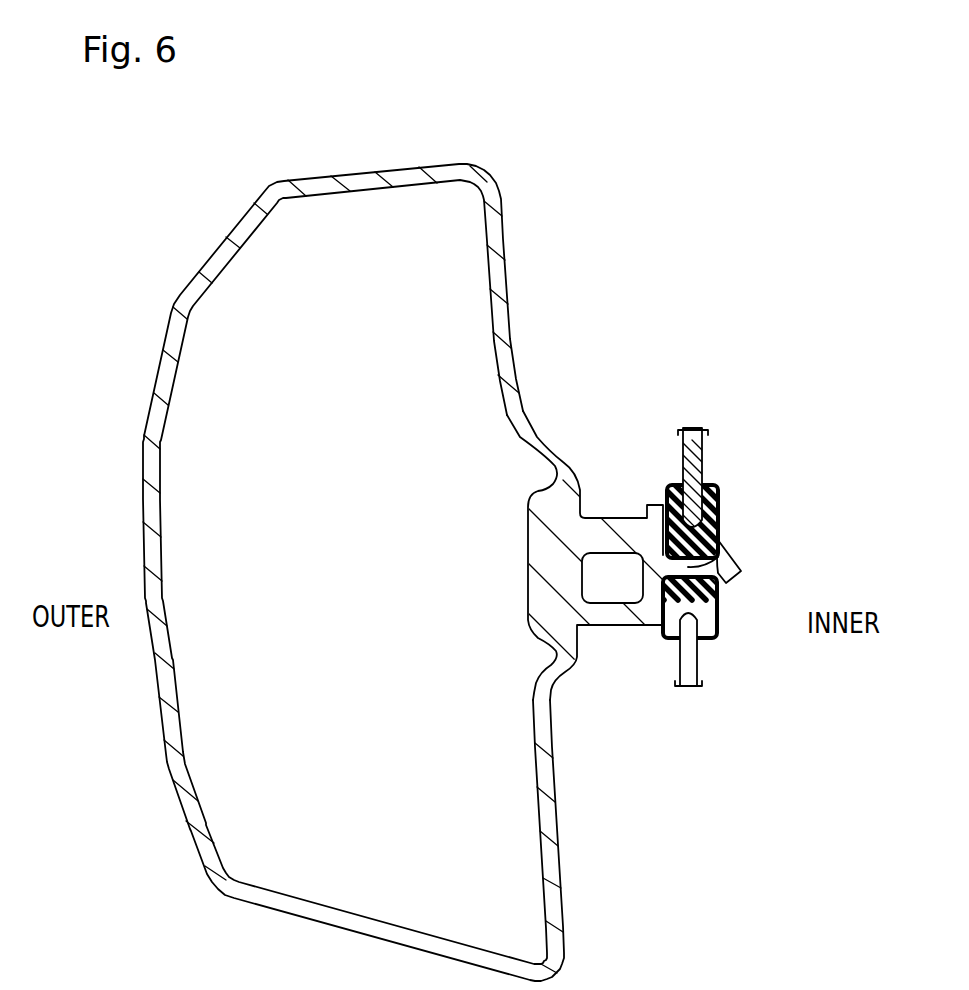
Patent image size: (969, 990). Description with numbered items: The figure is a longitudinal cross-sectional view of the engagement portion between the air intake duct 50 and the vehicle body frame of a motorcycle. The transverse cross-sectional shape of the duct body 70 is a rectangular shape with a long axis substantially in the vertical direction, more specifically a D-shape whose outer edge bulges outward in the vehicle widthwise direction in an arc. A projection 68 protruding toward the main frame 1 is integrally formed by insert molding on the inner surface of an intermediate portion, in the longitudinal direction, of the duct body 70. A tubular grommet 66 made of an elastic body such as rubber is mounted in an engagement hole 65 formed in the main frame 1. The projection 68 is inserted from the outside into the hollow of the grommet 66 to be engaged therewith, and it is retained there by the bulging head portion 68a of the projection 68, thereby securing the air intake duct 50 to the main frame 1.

The air intake duct 50 is at (460, 572).
The duct body 70 is at (200, 268).
The main frame 1 is at (700, 450).
The engagement hole 65 is at (712, 523).
The tubular grommet 66 is at (708, 620).
The projection 68 is at (688, 567).
The bulging head portion 68a is at (733, 563).